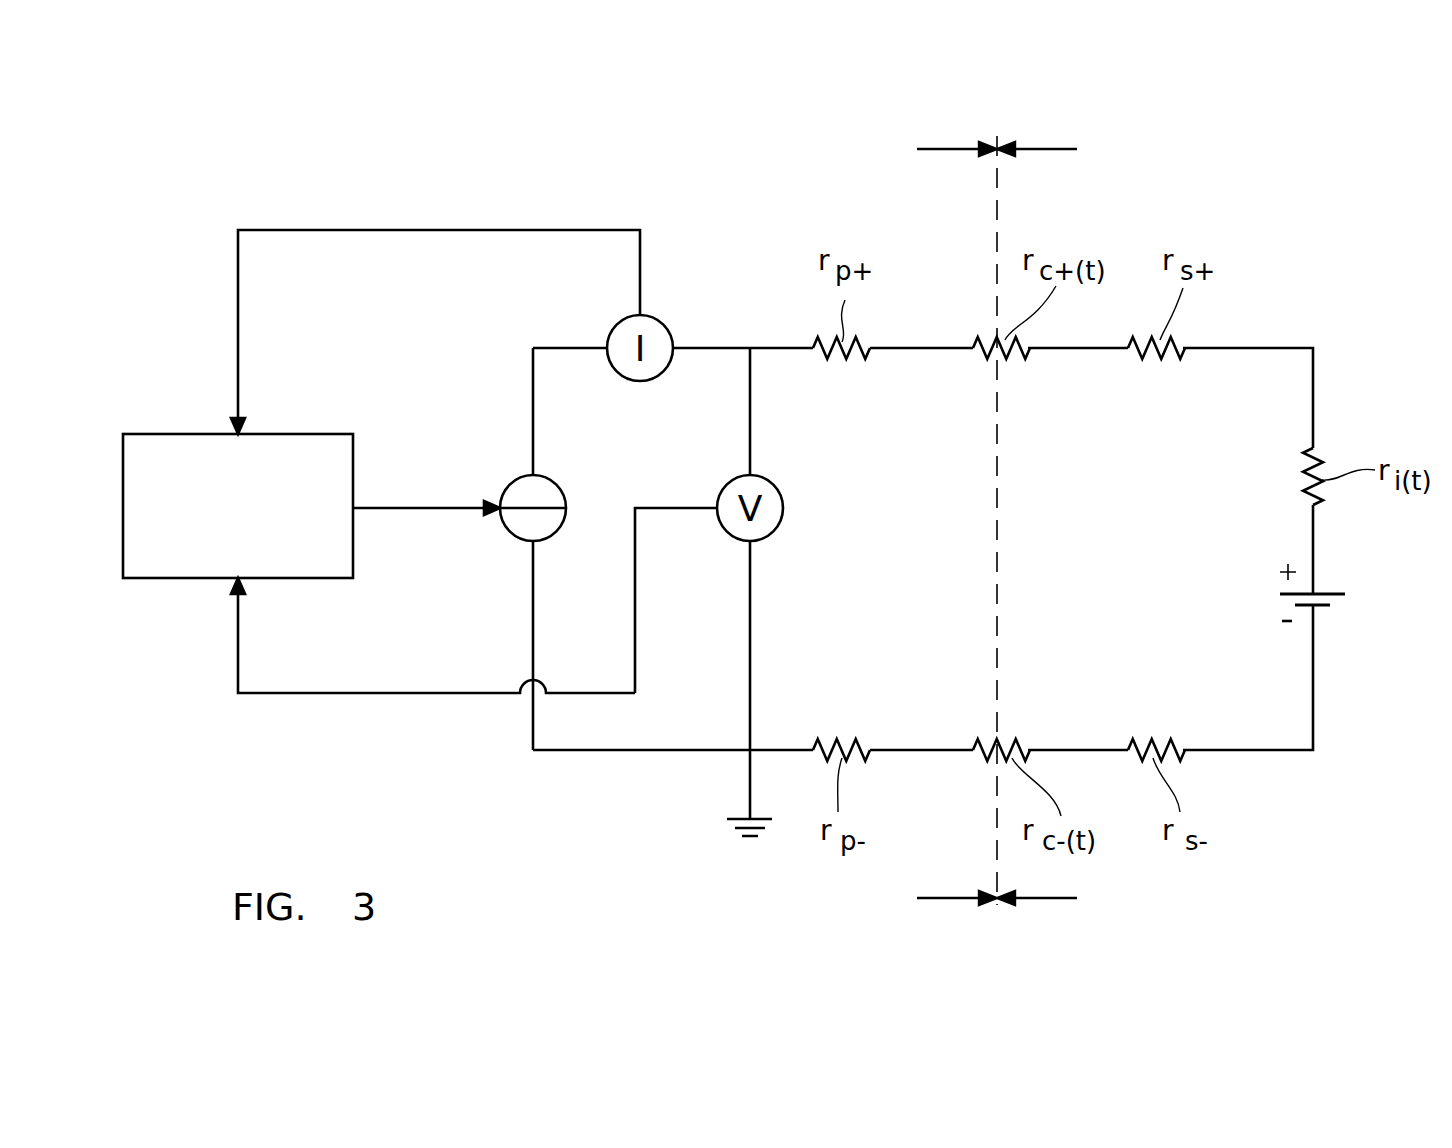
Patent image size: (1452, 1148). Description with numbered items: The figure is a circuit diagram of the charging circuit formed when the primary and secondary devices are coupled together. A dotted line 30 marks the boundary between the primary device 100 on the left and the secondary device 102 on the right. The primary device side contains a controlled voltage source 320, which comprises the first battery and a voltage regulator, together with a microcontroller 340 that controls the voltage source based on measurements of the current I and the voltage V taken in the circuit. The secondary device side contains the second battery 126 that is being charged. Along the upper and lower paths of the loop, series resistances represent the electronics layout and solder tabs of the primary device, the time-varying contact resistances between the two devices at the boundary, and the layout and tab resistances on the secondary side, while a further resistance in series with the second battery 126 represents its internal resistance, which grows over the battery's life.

The microcontroller 340 is at (300, 434).
The controlled voltage source 320 is at (550, 480).
The dotted line 30 is at (997, 136).
The primary device 100 is at (858, 170).
The secondary device 102 is at (1143, 170).
The second battery 126 is at (1335, 601).